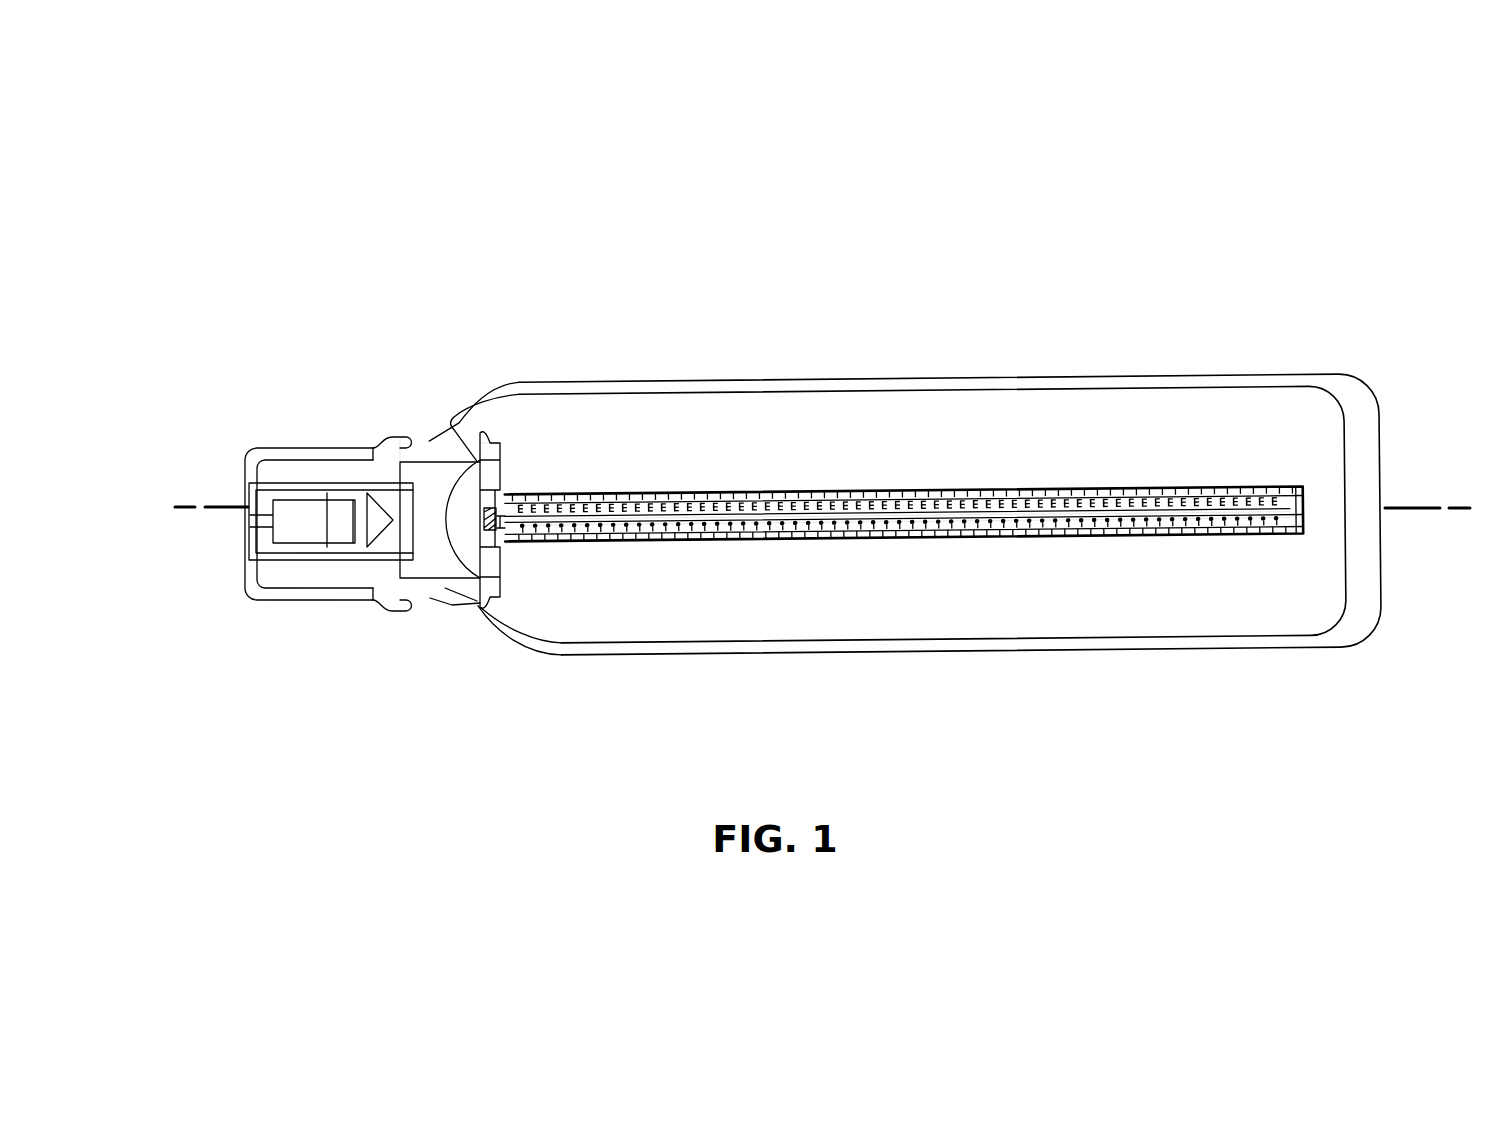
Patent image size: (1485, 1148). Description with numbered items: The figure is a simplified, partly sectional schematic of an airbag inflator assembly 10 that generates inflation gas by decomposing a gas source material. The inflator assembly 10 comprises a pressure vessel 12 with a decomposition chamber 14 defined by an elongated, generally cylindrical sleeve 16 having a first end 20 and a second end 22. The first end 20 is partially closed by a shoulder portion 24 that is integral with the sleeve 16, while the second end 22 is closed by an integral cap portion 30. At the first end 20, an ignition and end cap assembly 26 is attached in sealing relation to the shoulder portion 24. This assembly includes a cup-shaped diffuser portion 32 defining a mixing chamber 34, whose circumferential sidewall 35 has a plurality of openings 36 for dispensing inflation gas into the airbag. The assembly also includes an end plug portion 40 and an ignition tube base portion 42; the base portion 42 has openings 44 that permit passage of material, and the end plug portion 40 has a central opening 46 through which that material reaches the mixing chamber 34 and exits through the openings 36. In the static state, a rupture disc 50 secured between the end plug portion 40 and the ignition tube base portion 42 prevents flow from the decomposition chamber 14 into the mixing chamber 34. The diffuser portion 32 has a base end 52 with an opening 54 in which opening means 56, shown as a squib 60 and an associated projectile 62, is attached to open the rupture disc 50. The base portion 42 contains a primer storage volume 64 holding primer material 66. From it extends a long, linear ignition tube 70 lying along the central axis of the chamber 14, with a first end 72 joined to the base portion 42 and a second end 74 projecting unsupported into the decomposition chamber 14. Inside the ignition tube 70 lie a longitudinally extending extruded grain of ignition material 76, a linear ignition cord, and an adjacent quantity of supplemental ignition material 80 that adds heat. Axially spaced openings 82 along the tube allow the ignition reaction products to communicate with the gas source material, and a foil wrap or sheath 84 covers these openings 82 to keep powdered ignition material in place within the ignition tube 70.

The airbag inflator assembly 10 is at (929, 303).
The pressure vessel 12 is at (1025, 375).
The chamber 14 is at (730, 424).
The sleeve 16 is at (947, 651).
The first end 20 is at (416, 529).
The second end 22 is at (1332, 653).
The shoulder portion 24 is at (467, 623).
The ignition and end cap assembly 26 is at (381, 428).
The cap portion 30 is at (1370, 490).
The diffuser portion 32 is at (268, 597).
The mixing chamber 34 is at (282, 455).
The sidewall 35 is at (300, 600).
The openings 36 is at (340, 452).
The end plug portion 40 is at (430, 455).
The ignition tube base portion 42 is at (492, 448).
The openings 44 is at (503, 488).
The central opening 46 is at (447, 583).
The rupture disc 50 is at (430, 440).
The base end 52 is at (245, 452).
The opening 54 is at (380, 528).
The opening means 56 is at (242, 503).
The squib 60 is at (297, 528).
The projectile 62 is at (378, 548).
The primer storage volume 64 is at (477, 592).
The primer material 66 is at (503, 498).
The ignition tube 70 is at (740, 538).
The first end 72 is at (507, 546).
The second end 74 is at (1298, 533).
The extruded grain of ignition material 76 is at (940, 520).
The supplemental ignition material 80 is at (1025, 538).
The openings 82 is at (860, 535).
The foil wrap or sheath 84 is at (1075, 497).